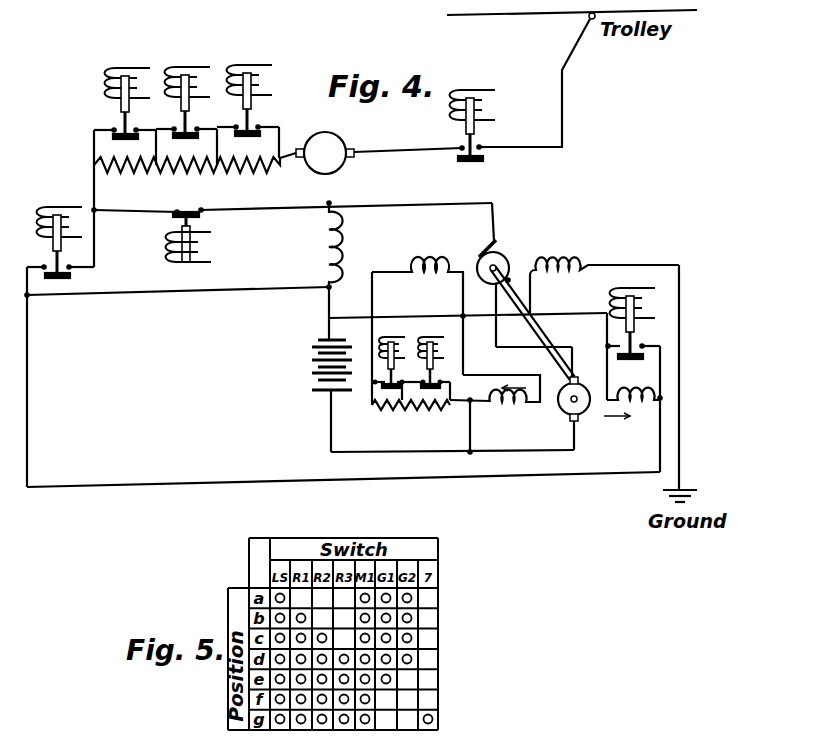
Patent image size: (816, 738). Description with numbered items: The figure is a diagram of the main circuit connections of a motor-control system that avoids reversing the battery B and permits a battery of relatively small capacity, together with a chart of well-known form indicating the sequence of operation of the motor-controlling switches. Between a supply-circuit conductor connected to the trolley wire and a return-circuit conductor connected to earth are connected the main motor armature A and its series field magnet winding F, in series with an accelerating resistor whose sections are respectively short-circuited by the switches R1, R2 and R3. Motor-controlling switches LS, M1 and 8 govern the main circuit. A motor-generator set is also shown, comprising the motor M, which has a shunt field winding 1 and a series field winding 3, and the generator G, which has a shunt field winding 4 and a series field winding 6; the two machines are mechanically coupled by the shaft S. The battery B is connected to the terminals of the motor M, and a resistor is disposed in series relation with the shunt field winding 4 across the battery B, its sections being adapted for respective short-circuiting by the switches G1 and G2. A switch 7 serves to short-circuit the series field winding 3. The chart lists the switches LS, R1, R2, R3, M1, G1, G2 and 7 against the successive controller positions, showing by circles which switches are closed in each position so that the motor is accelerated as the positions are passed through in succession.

The accelerating resistor short-circuiting switch R1 is at (252, 130).
The accelerating resistor short-circuiting switch R2 is at (190, 132).
The accelerating resistor short-circuiting switch R3 is at (129, 133).
The motor-controlling switch LS is at (435, 125).
The main motor armature A is at (317, 153).
The motor-controlling switch M1 is at (213, 219).
The motor-controlling switch 8 is at (63, 268).
The series field magnet winding F is at (341, 252).
The shunt field winding of generator 4 is at (437, 266).
The generator G is at (503, 258).
The series field winding of generator 6 is at (576, 261).
The switch 7 is at (641, 351).
The shaft S is at (541, 338).
The battery B is at (316, 377).
The shunt field resistor short-circuiting switch G1 is at (393, 384).
The shunt field resistor short-circuiting switch G2 is at (433, 384).
The shunt field winding of motor 1 is at (519, 411).
The motor M is at (567, 413).
The series field winding of motor 3 is at (633, 410).